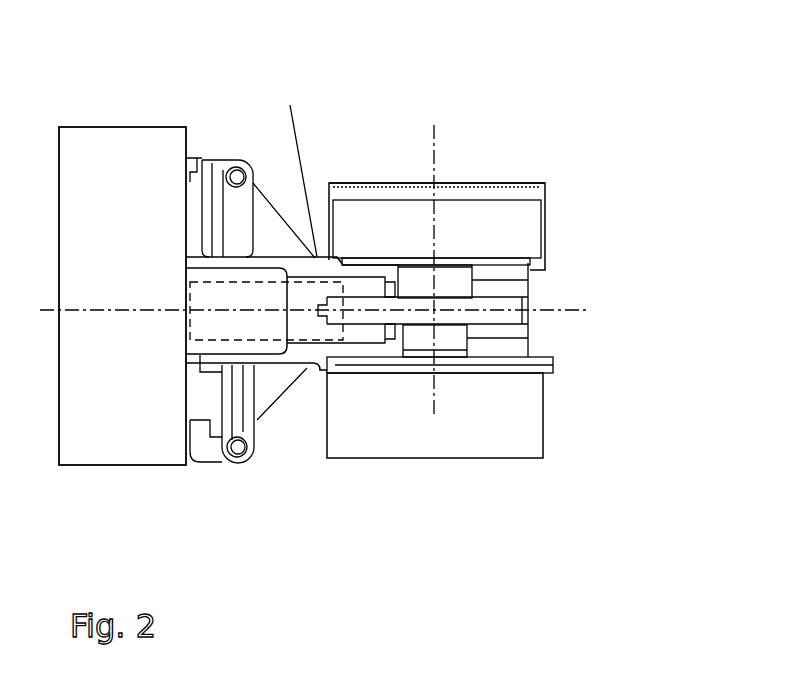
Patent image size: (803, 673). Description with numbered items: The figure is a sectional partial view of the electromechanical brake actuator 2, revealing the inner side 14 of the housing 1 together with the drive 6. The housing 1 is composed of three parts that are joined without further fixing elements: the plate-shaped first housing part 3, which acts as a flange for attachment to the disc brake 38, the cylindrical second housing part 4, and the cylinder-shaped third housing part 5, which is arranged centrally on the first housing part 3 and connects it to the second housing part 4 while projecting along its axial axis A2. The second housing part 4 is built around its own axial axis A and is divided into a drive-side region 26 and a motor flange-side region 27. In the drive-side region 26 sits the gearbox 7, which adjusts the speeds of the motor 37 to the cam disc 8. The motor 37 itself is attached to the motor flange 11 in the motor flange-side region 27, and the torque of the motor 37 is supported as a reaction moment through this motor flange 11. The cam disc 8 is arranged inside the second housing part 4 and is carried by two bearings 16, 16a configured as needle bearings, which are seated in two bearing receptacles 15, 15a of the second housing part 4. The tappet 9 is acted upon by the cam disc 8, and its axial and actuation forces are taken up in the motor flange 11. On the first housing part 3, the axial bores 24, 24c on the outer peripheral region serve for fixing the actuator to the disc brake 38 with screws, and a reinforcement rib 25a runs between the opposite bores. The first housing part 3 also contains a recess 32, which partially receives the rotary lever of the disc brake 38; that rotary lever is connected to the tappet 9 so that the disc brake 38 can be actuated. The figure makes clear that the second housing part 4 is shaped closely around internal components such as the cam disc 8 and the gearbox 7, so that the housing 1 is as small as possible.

The housing 1 is at (510, 184).
The electromechanical brake actuator 2 is at (640, 72).
The first housing part 3 is at (232, 310).
The second housing part 4 is at (545, 202).
The third housing part 5 is at (298, 167).
The drive 6 is at (546, 354).
The gearbox 7 is at (542, 202).
The cam disc 8 is at (528, 325).
The tappet 9 is at (263, 340).
The motor flange 11 is at (543, 358).
The inner side 14 is at (380, 218).
The bearing receptacle 15 is at (562, 272).
The bearing receptacle 15a is at (467, 338).
The bearing 16 is at (455, 268).
The bearing 16a is at (480, 360).
The axial bore 24 is at (238, 462).
The axial bore 24c is at (235, 163).
The reinforcement rib 25a is at (255, 423).
The drive-side region 26 is at (407, 110).
The motor flange-side region 27 is at (427, 462).
The recess 32 is at (212, 353).
The motor 37 is at (543, 445).
The disc brake 38 is at (113, 263).
The axial axis A is at (451, 246).
The axial axis A2 is at (590, 310).